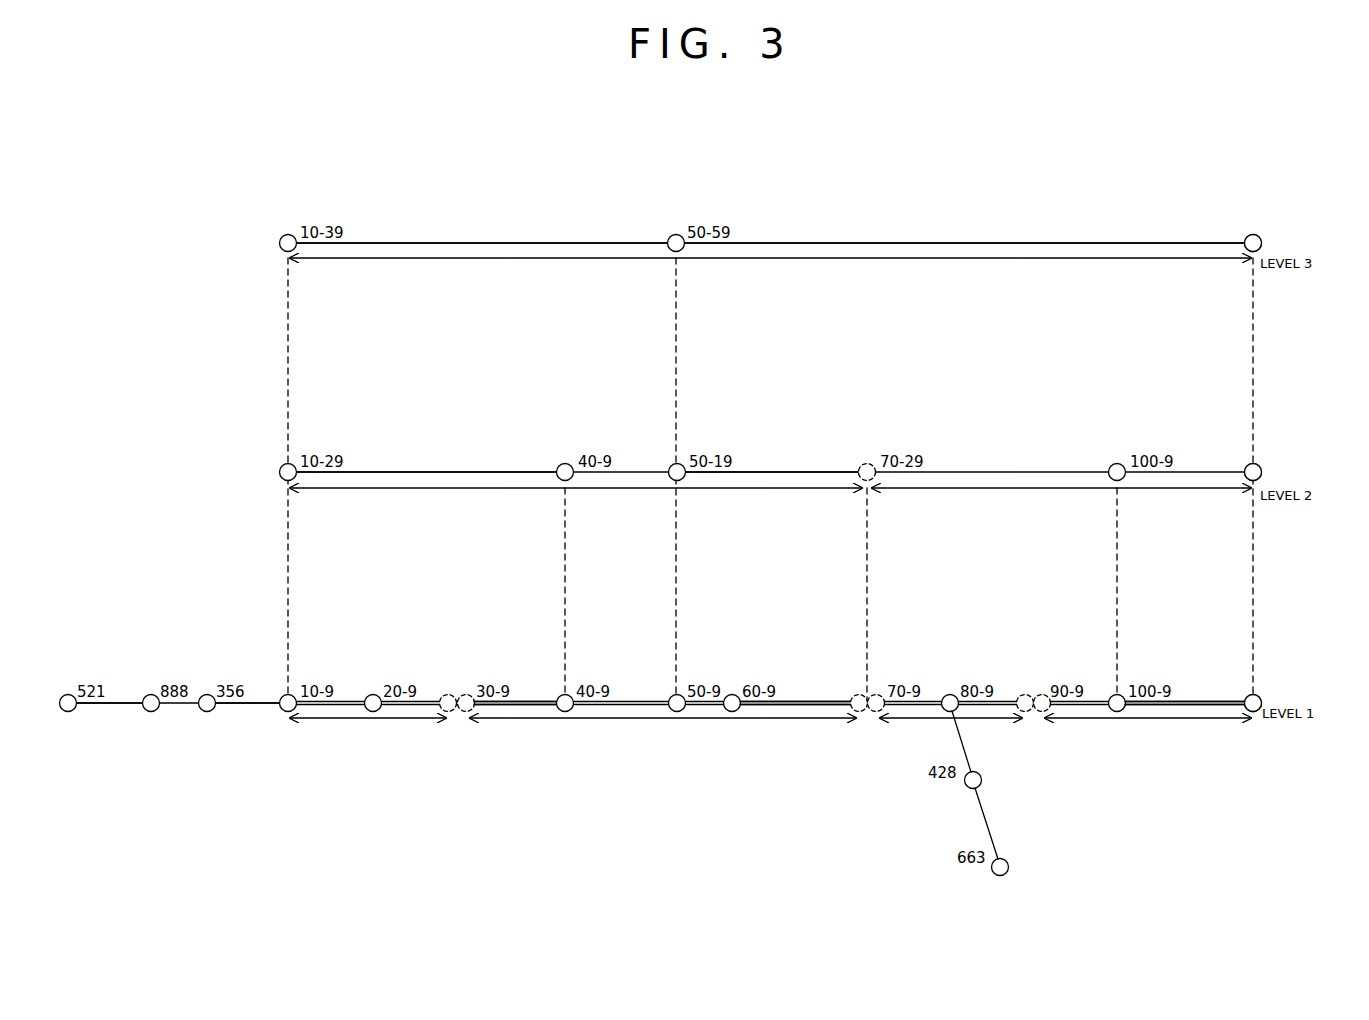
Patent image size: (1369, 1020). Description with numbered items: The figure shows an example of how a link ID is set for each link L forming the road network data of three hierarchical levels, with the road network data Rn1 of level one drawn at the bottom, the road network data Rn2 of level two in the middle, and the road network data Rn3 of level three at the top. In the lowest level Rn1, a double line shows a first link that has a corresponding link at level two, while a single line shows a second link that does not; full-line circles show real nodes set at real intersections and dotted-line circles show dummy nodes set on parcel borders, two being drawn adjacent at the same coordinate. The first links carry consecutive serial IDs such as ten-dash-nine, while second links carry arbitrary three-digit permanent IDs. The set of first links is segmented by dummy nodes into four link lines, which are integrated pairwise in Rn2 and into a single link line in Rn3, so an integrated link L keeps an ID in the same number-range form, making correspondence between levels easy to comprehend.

The link L is at (494, 242).
The road network data of level 1 Rn1 is at (1267, 699).
The road network data of level 2 Rn2 is at (1265, 470).
The road network data of level 3 Rn3 is at (1264, 240).